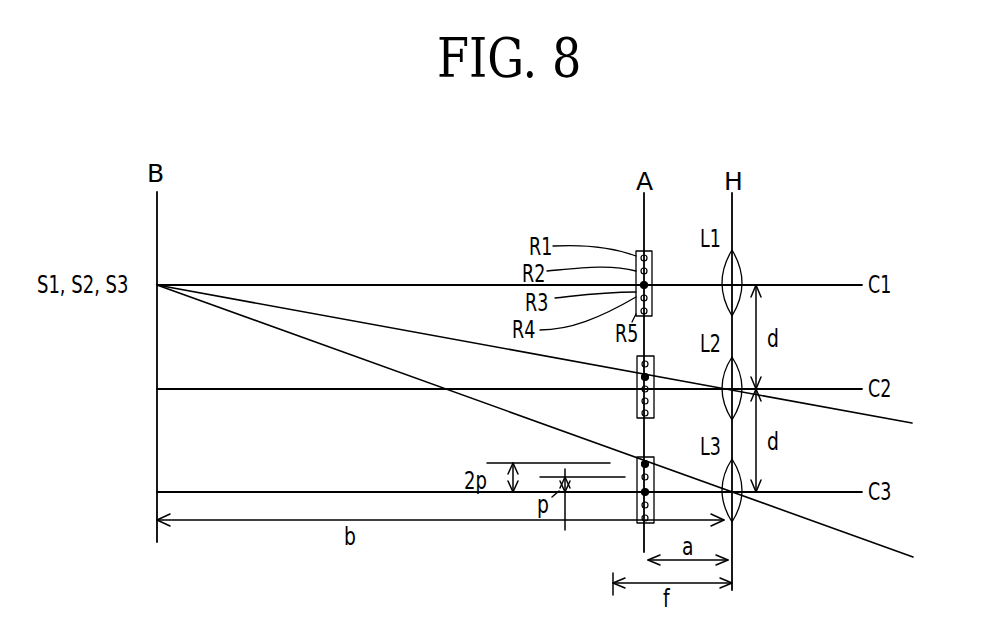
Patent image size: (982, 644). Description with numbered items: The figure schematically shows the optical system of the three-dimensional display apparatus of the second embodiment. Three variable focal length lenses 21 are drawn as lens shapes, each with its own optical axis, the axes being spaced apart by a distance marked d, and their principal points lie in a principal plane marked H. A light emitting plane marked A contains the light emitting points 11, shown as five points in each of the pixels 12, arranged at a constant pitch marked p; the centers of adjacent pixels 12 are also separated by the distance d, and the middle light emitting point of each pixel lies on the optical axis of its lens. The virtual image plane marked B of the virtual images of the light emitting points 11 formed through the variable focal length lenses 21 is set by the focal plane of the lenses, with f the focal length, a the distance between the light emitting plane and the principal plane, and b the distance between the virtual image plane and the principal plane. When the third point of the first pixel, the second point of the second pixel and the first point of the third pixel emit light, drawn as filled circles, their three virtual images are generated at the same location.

The light emitting points 11 is at (636, 251).
The pixels 12 is at (652, 249).
The variable focal length lenses 21 is at (742, 258).